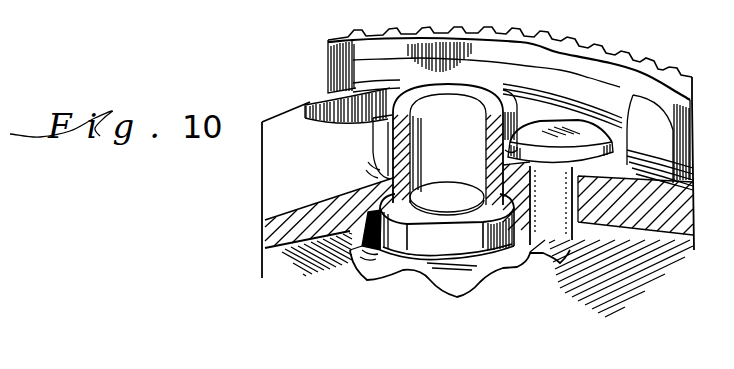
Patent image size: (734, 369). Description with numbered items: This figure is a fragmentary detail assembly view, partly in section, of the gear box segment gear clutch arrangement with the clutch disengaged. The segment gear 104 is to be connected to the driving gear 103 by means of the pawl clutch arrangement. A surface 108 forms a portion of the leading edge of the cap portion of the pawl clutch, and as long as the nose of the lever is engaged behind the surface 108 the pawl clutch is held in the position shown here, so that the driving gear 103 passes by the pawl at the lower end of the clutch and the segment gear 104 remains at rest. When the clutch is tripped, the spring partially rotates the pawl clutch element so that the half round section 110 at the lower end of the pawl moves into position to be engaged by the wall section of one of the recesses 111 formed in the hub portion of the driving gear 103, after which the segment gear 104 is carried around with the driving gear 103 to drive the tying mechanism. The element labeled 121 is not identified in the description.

The driving gear 103 is at (287, 260).
The segment gear 104 is at (290, 152).
The surface 108 is at (620, 130).
The half round section 110 is at (540, 236).
The recesses 111 is at (457, 297).
The housing shoulder 121 is at (263, 122).